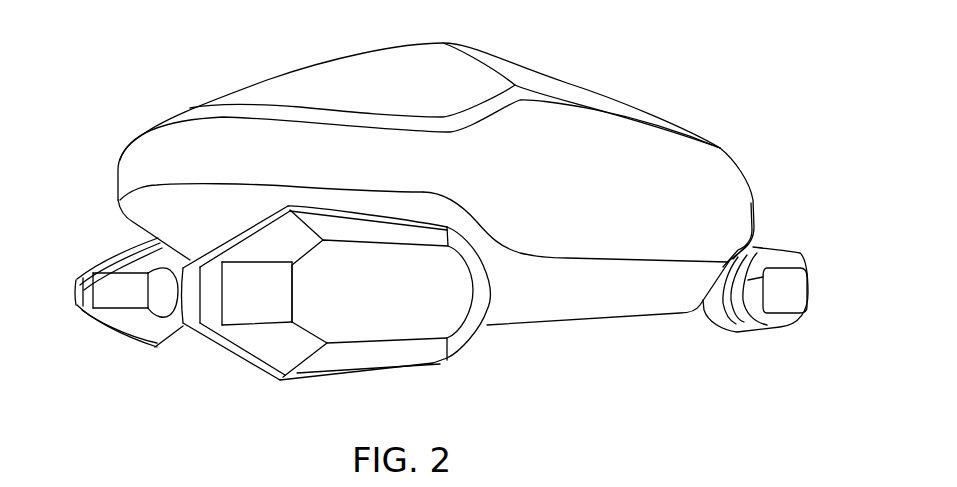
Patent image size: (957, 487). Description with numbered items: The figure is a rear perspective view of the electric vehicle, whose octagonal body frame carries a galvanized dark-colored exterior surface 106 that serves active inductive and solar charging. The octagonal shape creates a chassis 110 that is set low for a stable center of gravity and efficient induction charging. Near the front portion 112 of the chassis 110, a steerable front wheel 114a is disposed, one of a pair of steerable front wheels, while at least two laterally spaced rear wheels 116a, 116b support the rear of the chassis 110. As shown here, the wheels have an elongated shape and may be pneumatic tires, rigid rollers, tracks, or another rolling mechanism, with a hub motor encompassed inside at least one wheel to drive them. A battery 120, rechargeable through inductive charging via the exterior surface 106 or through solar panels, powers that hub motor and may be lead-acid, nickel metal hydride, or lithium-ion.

The galvanized dark-colored exterior surface 106 is at (572, 182).
The chassis 110 is at (178, 230).
The front portion 112 is at (670, 93).
The steerable front wheel 114a is at (753, 267).
The rear wheel 116a is at (288, 340).
The rear wheel 116b is at (123, 302).
The battery 120 is at (552, 298).